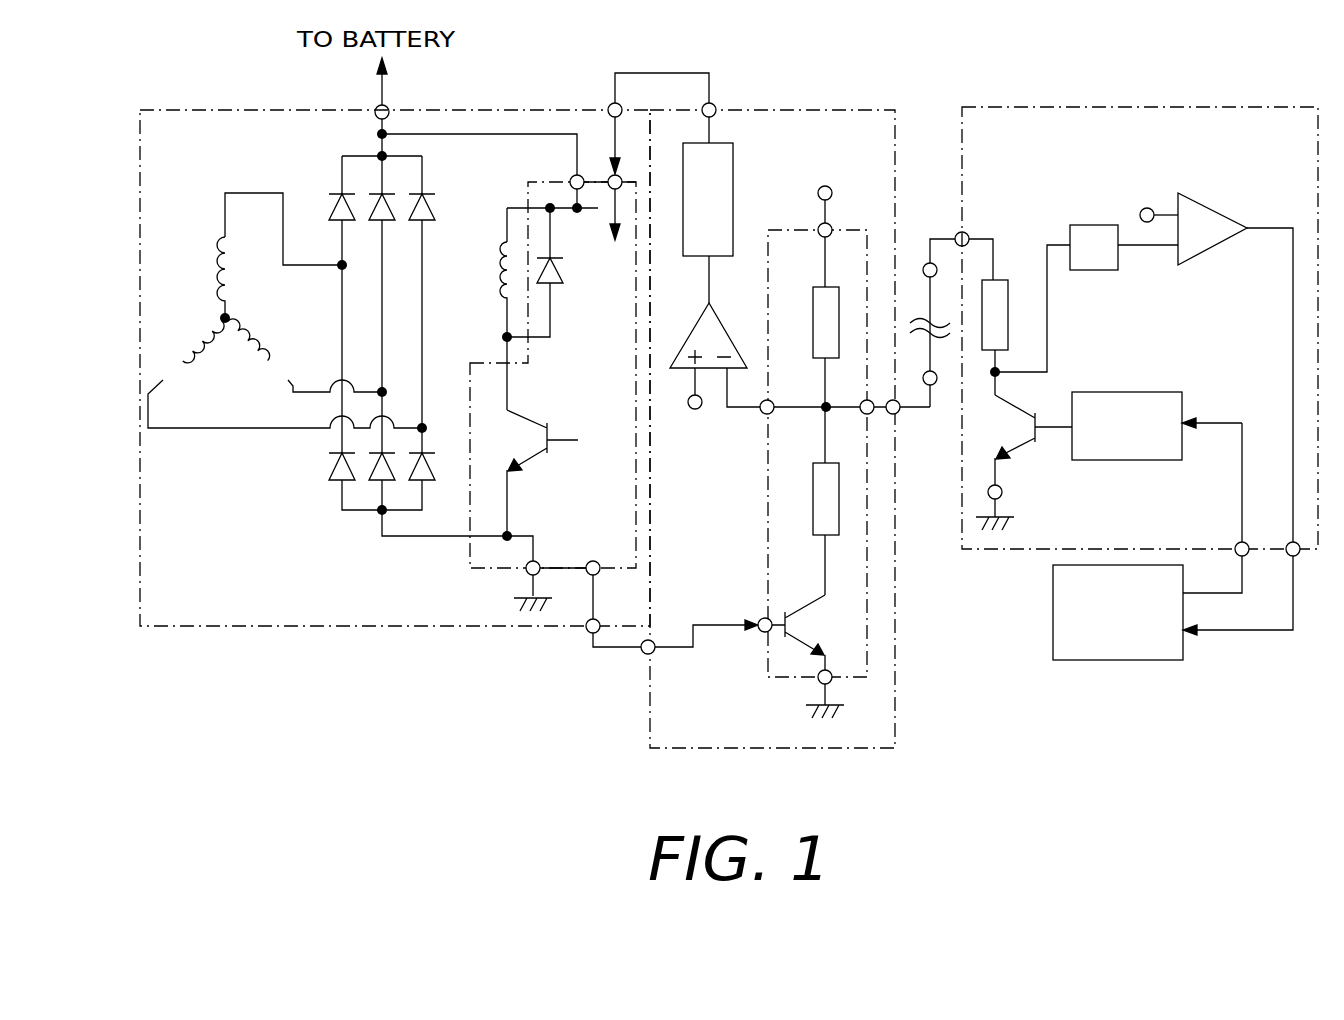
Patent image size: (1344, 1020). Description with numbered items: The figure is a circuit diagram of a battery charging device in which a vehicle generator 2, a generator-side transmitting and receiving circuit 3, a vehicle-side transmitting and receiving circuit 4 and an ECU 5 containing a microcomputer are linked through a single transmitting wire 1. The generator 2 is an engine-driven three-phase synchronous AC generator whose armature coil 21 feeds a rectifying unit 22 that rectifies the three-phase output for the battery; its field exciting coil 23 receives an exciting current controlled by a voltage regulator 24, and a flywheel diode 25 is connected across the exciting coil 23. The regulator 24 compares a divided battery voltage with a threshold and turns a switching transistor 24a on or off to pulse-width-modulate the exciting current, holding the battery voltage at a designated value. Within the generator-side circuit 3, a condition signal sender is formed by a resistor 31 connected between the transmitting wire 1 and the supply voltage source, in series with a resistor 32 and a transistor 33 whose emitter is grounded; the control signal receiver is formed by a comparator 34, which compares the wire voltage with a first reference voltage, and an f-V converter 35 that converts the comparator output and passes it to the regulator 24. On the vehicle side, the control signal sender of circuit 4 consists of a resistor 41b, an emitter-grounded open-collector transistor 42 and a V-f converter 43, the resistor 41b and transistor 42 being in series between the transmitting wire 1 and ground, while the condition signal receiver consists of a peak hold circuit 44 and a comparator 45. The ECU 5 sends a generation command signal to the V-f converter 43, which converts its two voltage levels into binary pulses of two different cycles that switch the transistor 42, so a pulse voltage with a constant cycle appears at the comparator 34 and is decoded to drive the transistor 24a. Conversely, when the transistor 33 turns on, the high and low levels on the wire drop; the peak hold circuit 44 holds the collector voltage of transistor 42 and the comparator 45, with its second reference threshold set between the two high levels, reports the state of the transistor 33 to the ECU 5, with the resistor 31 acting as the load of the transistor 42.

The transmitting wire 1 is at (935, 348).
The generator for a vehicle 2 is at (340, 626).
The armature coil 21 is at (218, 405).
The rectifying unit 22 is at (333, 442).
The field exciting coil 23 is at (495, 273).
The voltage regulator 24 is at (473, 607).
The switching transistor 24a is at (533, 457).
The flywheel diode 25 is at (555, 285).
The generator-side transmitting and receiving circuit 3 is at (648, 690).
The resistor 31 is at (813, 313).
The resistor 32 is at (813, 488).
The transistor 33 is at (850, 633).
The comparator 34 is at (728, 327).
The f-V converter 35 is at (728, 142).
The vehicle-side transmitting and receiving circuit 4 is at (962, 147).
The resistor 41b is at (1000, 285).
The transistor 42 is at (1023, 443).
The V-f converter 43 is at (1108, 392).
The peak hold circuit 44 is at (1090, 225).
The comparator 45 is at (1205, 205).
The ECU 5 is at (1053, 604).